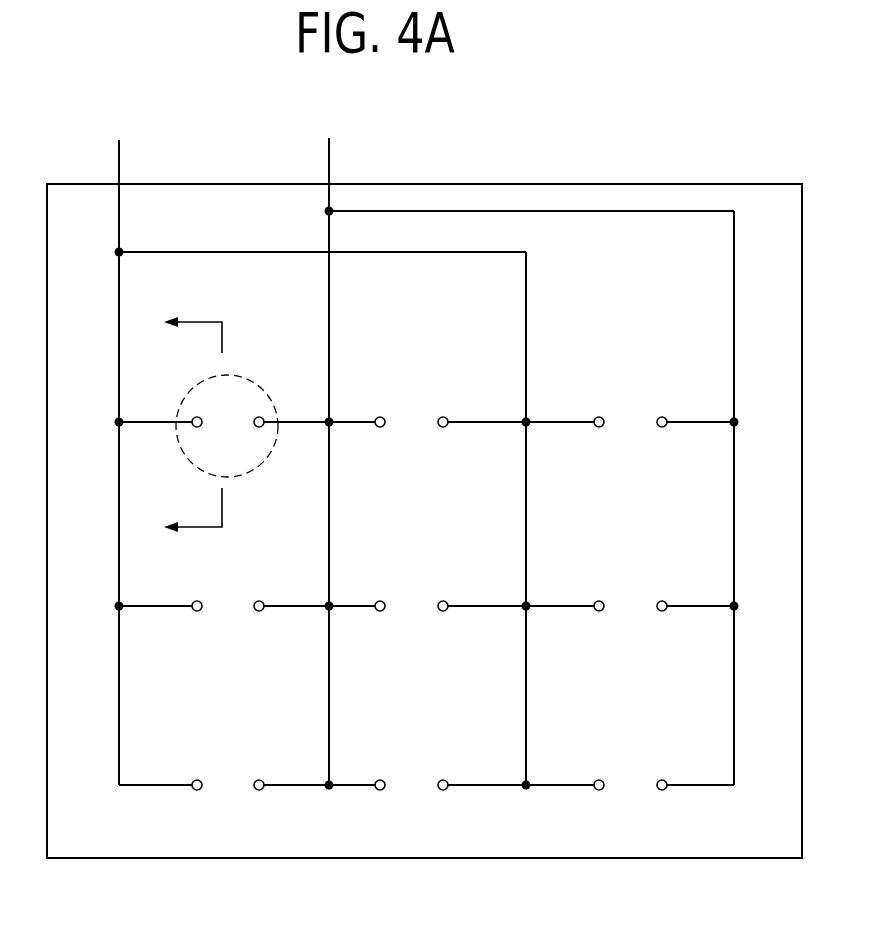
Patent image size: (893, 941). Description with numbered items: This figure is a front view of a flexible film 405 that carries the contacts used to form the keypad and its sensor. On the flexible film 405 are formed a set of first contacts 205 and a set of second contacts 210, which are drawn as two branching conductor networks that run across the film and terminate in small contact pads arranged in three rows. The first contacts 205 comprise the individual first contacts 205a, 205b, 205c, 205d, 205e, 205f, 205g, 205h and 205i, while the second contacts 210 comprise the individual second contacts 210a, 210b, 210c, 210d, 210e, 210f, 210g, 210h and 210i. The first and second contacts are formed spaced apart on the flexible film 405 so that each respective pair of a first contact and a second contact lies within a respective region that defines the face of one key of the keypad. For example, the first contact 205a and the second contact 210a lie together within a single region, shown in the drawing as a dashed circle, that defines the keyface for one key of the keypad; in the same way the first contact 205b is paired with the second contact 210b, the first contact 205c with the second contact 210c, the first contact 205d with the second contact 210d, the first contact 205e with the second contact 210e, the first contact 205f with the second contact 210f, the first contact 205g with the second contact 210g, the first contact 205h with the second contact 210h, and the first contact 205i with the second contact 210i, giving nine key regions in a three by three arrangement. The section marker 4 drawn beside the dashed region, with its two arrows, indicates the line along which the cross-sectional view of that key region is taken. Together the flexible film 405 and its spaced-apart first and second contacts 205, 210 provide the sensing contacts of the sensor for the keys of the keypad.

The flexible film 405 is at (714, 183).
The first contacts 205 is at (193, 251).
The second contacts 210 is at (440, 210).
The section line of FIG. 4 is at (209, 426).
The first contact 205a is at (193, 418).
The first contact 205b is at (193, 602).
The first contact 205c is at (193, 780).
The first contact 205d is at (463, 403).
The first contact 205e is at (475, 587).
The first contact 205f is at (444, 779).
The first contact 205g is at (596, 418).
The first contact 205h is at (597, 602).
The first contact 205i is at (597, 779).
The second contact 210a is at (260, 417).
The second contact 210b is at (273, 586).
The second contact 210c is at (263, 780).
The second contact 210d is at (380, 417).
The second contact 210e is at (378, 602).
The second contact 210f is at (380, 779).
The second contact 210g is at (664, 418).
The second contact 210h is at (683, 582).
The second contact 210i is at (664, 779).